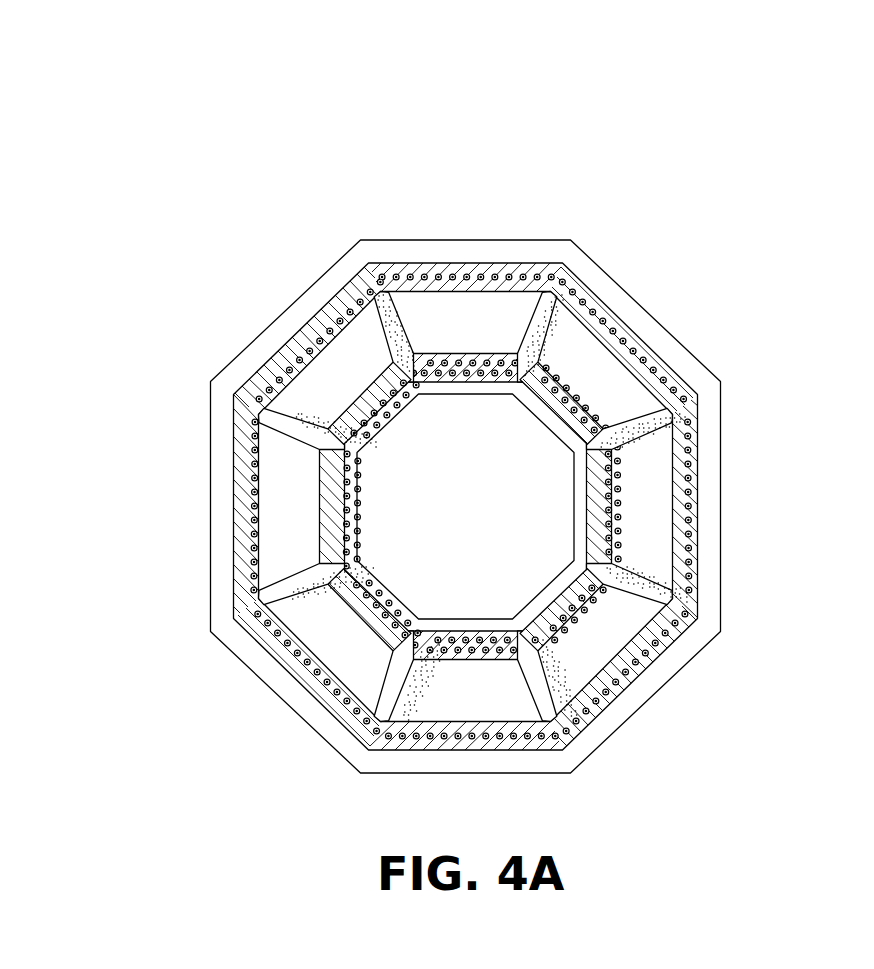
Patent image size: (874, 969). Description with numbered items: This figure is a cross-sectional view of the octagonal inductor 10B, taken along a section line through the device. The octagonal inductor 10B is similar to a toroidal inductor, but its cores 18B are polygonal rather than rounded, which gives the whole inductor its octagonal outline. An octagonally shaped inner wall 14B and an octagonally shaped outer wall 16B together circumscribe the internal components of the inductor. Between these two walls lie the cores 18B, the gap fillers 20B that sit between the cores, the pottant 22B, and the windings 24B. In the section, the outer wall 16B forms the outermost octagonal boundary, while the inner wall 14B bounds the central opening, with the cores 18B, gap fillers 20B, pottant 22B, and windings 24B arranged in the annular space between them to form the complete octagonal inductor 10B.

The octagonal inductor 10B is at (224, 266).
The inner wall 14B is at (443, 386).
The outer wall 16B is at (535, 239).
The core 18B is at (633, 518).
The gap filler 20B is at (642, 427).
The pottant 22B is at (325, 552).
The winding 24B is at (590, 412).